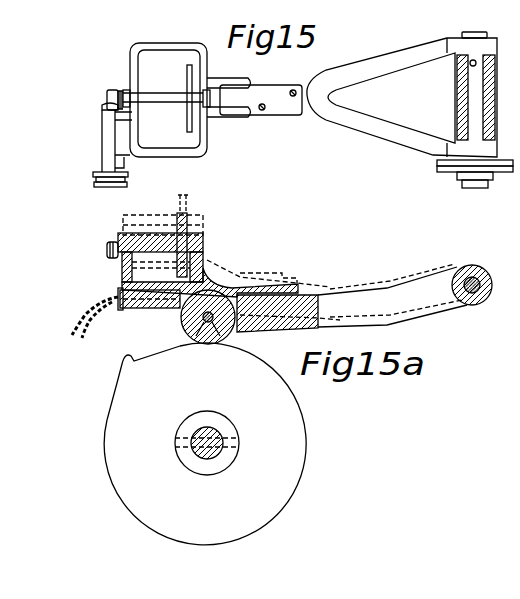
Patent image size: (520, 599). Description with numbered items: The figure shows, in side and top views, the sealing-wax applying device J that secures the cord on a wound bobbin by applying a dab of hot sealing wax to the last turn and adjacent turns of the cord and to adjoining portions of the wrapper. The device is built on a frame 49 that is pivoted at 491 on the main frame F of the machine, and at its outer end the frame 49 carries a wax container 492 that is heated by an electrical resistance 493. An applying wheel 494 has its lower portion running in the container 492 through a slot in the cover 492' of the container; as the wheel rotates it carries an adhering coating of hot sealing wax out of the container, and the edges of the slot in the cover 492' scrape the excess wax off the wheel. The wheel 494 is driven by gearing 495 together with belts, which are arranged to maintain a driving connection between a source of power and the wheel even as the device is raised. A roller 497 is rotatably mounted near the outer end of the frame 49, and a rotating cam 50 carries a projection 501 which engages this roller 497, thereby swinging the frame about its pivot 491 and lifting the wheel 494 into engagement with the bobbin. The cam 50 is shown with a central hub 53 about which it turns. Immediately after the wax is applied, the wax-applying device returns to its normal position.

In FIG. 15, the frame 49 is at (390, 58).
In FIG. 15A, the frame 49 is at (328, 300).
In FIG. 15, the pivot 491 is at (475, 32).
In FIG. 15A, the pivot 491 is at (472, 268).
In FIG. 15, the wax container 492 is at (168, 85).
In FIG. 15A, the wax container 492 is at (173, 277).
In FIG. 15A, the cover 492' is at (126, 232).
In FIG. 15A, the electrical resistance 493 is at (138, 300).
In FIG. 15, the applying wheel 494 is at (187, 82).
In FIG. 15A, the applying wheel 494 is at (188, 199).
In FIG. 15, the gearing 495 is at (102, 108).
In FIG. 15A, the gearing 495 is at (107, 250).
In FIG. 15A, the roller 497 is at (222, 328).
In FIG. 15A, the cam 50 is at (179, 444).
In FIG. 15A, the projection 501 is at (122, 370).
In FIG. 15A, the hub / shaft 53 is at (200, 458).
In FIG. 15, the sealing-wax applying device J is at (222, 120).
In FIG. 15A, the sealing-wax applying device J is at (240, 262).
In FIG. 15, the frame F is at (455, 90).